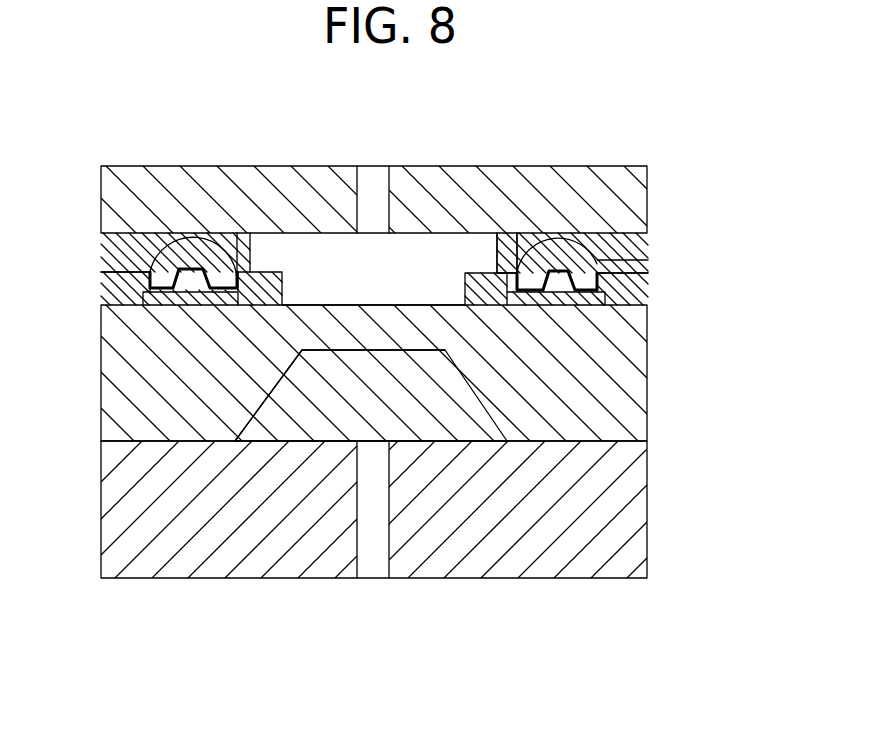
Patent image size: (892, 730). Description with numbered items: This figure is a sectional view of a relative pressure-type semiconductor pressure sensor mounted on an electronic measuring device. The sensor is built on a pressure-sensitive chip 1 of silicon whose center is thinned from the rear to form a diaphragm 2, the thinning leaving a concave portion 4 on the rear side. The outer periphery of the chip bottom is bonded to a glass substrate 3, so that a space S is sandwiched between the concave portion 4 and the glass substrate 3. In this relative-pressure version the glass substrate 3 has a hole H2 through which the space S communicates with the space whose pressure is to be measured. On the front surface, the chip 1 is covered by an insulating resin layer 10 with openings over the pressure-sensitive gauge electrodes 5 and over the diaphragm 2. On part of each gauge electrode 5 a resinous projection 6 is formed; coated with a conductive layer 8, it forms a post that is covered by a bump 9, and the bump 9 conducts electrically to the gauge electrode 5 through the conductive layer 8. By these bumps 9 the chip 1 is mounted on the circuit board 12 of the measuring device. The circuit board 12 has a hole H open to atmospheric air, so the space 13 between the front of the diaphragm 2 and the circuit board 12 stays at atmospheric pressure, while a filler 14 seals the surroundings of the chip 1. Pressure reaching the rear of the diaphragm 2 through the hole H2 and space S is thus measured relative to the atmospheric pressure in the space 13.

The pressure-sensitive chip 1 is at (633, 395).
The diaphragm 2 is at (342, 338).
The glass substrate 3 is at (635, 512).
The concave portion 4 is at (405, 353).
The pressure-sensitive gauge electrode 5 is at (585, 308).
The resinous projection 6 is at (647, 266).
The conductive layer 8 is at (542, 262).
The bump 9 is at (565, 246).
The insulating resin layer 10 is at (647, 295).
The circuit board 12 is at (647, 200).
The space 13 is at (328, 244).
The filler 14 is at (509, 241).
The hole H is at (371, 177).
The hole H2 is at (370, 570).
The space S is at (333, 428).